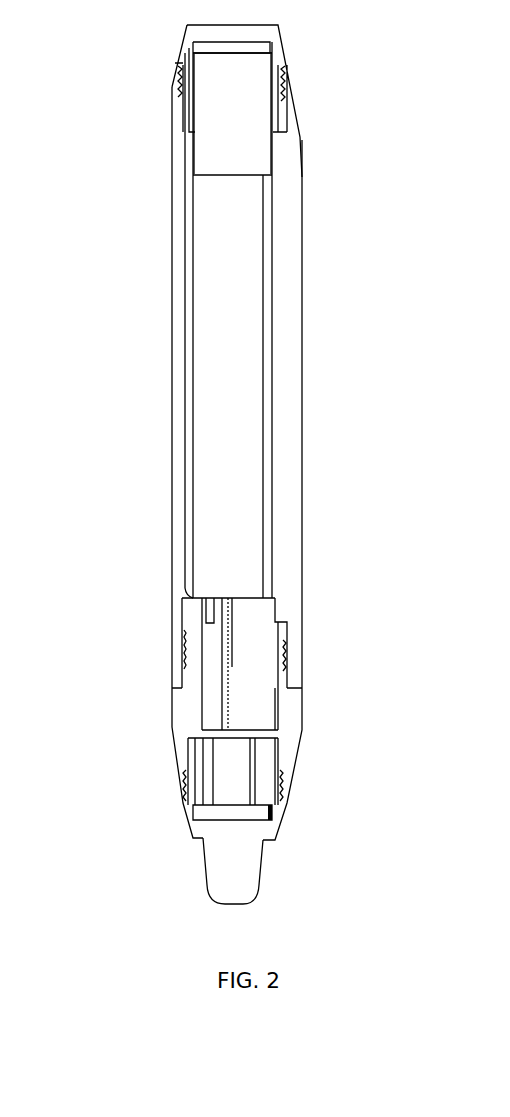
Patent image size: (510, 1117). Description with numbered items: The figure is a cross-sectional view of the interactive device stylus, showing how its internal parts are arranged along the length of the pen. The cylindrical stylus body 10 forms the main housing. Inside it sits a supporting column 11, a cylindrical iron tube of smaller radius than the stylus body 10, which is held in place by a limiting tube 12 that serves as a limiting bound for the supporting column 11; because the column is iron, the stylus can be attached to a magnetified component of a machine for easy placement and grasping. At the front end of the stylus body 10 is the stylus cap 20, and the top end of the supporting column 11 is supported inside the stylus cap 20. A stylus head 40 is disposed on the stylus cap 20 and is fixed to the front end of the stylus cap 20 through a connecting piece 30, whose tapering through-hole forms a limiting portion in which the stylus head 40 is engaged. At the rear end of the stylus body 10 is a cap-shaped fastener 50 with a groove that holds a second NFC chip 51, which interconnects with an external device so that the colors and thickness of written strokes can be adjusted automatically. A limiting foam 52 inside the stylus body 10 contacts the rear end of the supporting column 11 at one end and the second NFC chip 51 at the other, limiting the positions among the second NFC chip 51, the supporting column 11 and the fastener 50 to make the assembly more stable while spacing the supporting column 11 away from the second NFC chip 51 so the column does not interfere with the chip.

The stylus body 10 is at (302, 332).
The supporting column 11 is at (242, 453).
The limiting tube 12 is at (188, 373).
The stylus cap 20 is at (300, 715).
The connecting piece 30 is at (283, 820).
The stylus head 40 is at (238, 883).
The fastener 50 is at (280, 36).
The second NFC chip 51 is at (207, 42).
The limiting foam 52 is at (250, 153).